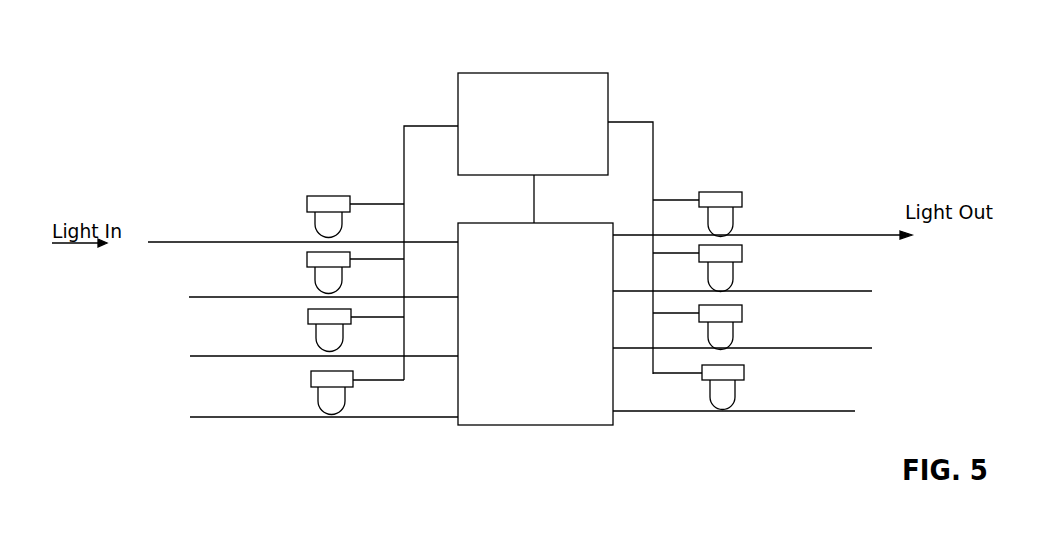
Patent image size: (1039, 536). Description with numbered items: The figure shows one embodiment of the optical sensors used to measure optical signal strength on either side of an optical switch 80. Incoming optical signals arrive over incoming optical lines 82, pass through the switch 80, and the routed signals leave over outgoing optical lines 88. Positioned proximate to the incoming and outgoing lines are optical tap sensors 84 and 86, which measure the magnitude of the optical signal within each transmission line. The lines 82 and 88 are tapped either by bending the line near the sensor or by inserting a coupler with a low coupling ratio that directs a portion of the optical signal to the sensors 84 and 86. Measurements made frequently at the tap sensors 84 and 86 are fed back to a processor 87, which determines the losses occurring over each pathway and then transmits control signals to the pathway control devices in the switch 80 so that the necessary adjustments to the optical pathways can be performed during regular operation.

The optical switch 80 is at (532, 425).
The incoming optical lines 82 is at (229, 417).
The optical tap sensors 84 is at (311, 371).
The optical tap sensors 86 is at (744, 365).
The processor 87 is at (507, 73).
The outgoing optical lines 88 is at (793, 411).